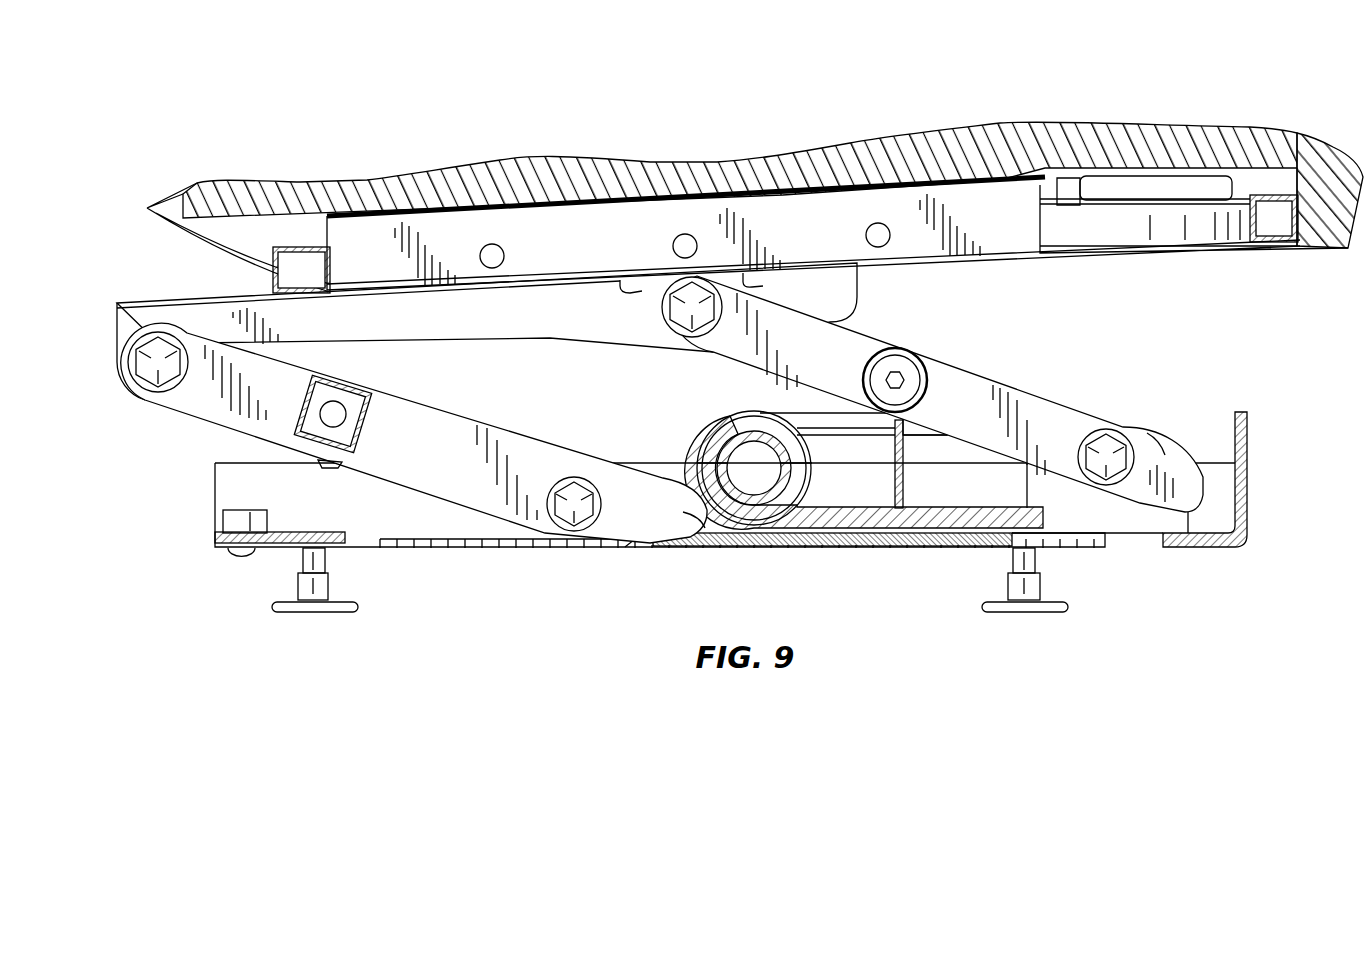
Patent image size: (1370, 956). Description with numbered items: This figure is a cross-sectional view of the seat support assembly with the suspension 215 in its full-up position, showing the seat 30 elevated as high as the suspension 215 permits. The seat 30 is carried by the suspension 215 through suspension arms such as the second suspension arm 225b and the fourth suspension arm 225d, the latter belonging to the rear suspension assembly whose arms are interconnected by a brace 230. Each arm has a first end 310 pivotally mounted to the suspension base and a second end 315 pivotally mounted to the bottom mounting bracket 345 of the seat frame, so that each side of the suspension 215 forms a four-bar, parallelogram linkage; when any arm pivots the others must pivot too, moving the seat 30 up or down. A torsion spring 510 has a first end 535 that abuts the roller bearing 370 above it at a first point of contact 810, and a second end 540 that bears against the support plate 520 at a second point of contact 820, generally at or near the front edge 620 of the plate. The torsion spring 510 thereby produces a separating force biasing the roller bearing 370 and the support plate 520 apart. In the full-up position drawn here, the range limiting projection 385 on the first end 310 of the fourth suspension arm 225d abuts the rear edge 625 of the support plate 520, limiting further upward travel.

The seat 30 is at (1115, 150).
The suspension 215 is at (1148, 360).
The second suspension arm 225b is at (1030, 412).
The fourth suspension arm 225d is at (445, 465).
The brace 230 is at (252, 418).
The first end 310 is at (620, 480).
The second end 315 is at (190, 350).
The bottom mounting bracket 345 is at (390, 322).
The roller bearing 370 is at (878, 349).
The range limiting projection 385 is at (682, 515).
The torsion spring 510 is at (685, 443).
The support plate 520 is at (845, 546).
The first end 535 is at (930, 412).
The second end 540 is at (925, 528).
The front edge 620 is at (1018, 545).
The rear edge 625 is at (655, 547).
The first point of contact 810 is at (830, 407).
The second point of contact 820 is at (1000, 545).